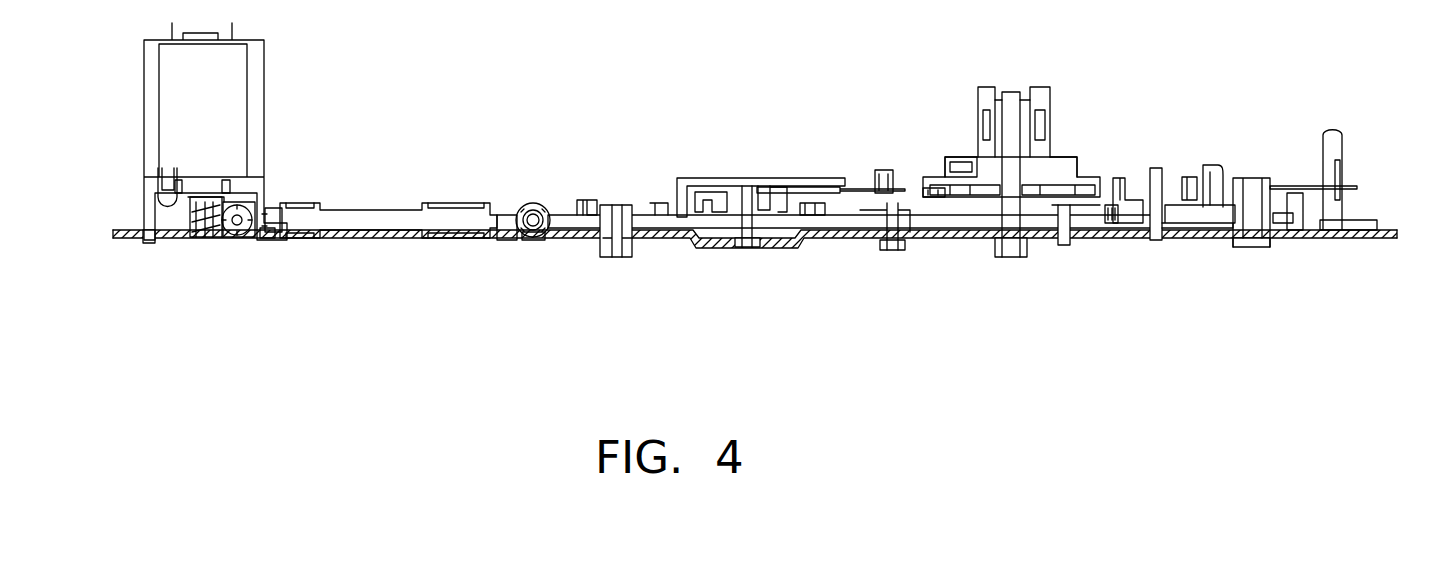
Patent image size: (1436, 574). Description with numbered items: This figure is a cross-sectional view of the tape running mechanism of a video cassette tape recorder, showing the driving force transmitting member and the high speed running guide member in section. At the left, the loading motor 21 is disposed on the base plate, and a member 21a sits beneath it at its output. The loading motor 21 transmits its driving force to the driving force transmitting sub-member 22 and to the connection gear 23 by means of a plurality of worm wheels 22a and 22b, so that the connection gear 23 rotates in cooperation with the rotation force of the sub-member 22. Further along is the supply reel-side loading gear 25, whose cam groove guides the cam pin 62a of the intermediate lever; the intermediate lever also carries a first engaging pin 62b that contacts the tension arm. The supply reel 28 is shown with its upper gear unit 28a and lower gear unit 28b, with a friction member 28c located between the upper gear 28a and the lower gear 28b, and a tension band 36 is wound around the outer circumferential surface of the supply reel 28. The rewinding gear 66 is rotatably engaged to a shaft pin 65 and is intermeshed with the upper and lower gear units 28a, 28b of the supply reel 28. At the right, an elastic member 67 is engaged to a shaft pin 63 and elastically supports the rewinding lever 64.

The loading motor 21 is at (177, 82).
The motor output coupling 21a is at (207, 238).
The worm wheel 22a is at (298, 238).
The driving force transmitting sub-member 22 is at (383, 232).
The worm wheel 22b is at (533, 238).
The connection gear 23 is at (572, 205).
The supply reel-side loading gear 25 is at (668, 203).
The cam pin 62a is at (817, 187).
The lower gear unit 28b is at (927, 185).
The upper gear unit 28a is at (925, 187).
The supply reel 28 is at (1053, 128).
The tension band 36 is at (1090, 170).
The friction member 28c is at (943, 237).
The first engaging pin 62b is at (1115, 243).
The rewinding gear 66 is at (1118, 185).
The shaft pin 65 is at (1158, 173).
The rewinding lever 64 is at (1175, 237).
The elastic member 67 is at (1232, 200).
The shaft pin 63 is at (1257, 243).